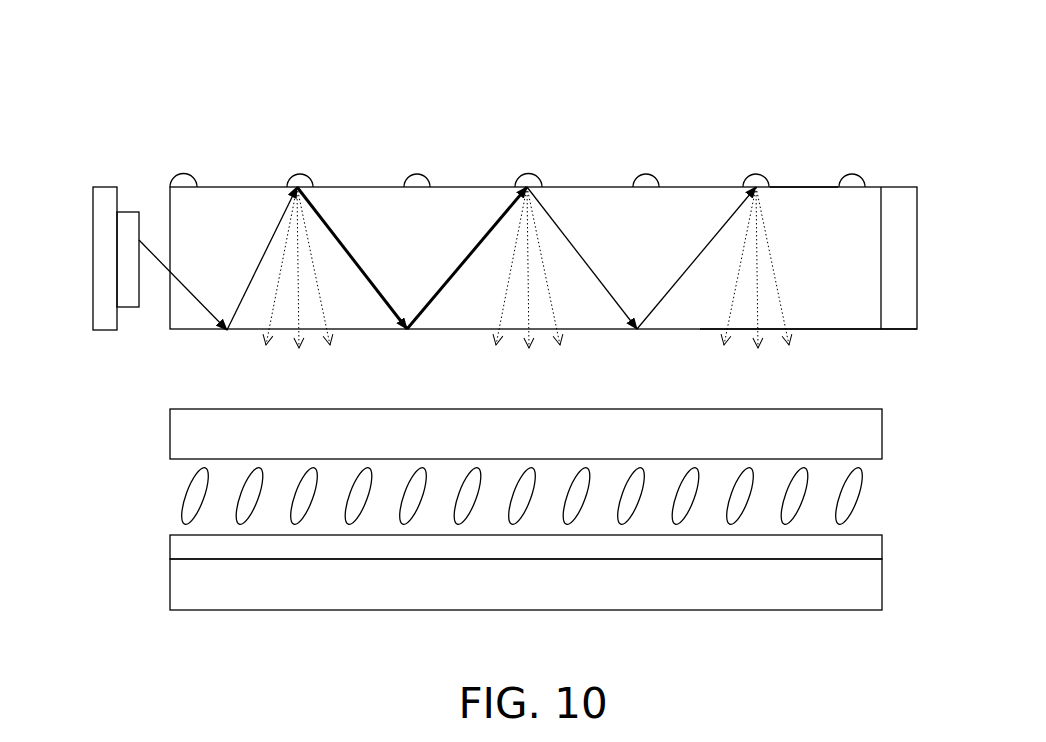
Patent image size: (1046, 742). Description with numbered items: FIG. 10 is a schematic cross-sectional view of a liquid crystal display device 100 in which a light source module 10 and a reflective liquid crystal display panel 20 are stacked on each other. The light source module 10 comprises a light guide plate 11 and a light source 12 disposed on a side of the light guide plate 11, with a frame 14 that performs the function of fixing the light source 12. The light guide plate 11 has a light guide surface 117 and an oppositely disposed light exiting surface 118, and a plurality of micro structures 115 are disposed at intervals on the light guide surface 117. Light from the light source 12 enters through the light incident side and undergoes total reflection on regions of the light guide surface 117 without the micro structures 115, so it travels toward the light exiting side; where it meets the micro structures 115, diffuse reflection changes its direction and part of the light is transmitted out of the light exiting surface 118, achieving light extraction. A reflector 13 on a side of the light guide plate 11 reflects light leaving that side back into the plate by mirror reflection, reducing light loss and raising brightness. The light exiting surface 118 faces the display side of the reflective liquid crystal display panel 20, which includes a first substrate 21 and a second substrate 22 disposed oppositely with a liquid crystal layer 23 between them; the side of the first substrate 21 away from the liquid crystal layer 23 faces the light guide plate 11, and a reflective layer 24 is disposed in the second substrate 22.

The liquid crystal display device 100 is at (127, 66).
The light source module 10 is at (70, 280).
The frame 14 is at (103, 200).
The light source 12 is at (126, 212).
The light guide plate 11 is at (226, 218).
The micro structures 115 is at (418, 178).
The light guide surface 117 is at (805, 187).
The reflector 13 is at (897, 205).
The light exiting surface 118 is at (840, 332).
The reflective liquid crystal display panel 20 is at (148, 491).
The first substrate 21 is at (867, 432).
The liquid crystal layer 23 is at (855, 490).
The reflective layer 24 is at (867, 545).
The second substrate 22 is at (867, 585).